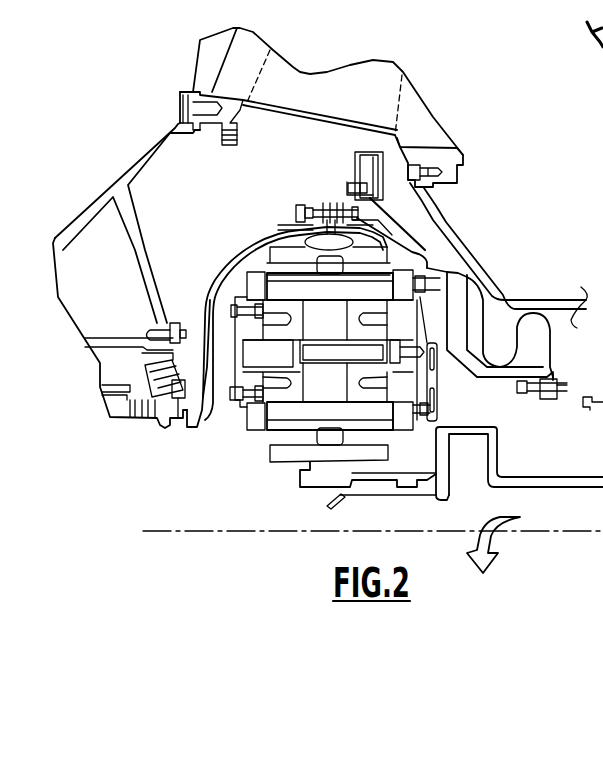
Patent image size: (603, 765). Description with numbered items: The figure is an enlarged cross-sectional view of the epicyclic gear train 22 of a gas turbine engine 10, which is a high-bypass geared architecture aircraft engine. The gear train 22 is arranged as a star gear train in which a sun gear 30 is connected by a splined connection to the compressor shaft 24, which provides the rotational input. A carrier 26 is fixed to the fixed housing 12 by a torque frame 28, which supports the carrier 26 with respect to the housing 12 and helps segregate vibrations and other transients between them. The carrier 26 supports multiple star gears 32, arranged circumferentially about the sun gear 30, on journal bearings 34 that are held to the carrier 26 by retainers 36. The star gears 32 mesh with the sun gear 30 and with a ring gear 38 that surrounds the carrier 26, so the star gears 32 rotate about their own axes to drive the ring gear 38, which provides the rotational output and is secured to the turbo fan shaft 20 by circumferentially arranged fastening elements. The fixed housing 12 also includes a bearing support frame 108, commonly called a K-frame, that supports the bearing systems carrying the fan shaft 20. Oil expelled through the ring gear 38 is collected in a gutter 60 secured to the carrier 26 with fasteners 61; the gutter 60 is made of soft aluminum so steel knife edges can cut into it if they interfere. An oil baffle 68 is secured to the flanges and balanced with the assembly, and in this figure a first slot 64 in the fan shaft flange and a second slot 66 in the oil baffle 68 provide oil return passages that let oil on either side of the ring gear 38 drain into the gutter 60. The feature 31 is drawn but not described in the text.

The gas turbine engine 10 is at (314, 48).
The fixed housing 12 is at (458, 270).
The turbo fan shaft 20 is at (190, 428).
The epicyclic gear train 22 is at (243, 487).
The compressor shaft 24 is at (527, 478).
The carrier 26 is at (405, 393).
The torque frame 28 is at (458, 353).
The sun gear 30 is at (310, 456).
The spring loop 31 is at (457, 308).
The star gears 32 is at (278, 290).
The journal bearings 34 is at (252, 372).
The retainers 36 is at (240, 387).
The ring gear 38 is at (294, 241).
The gutter 60 is at (307, 197).
The fasteners 61 is at (363, 187).
The first slot 64 is at (307, 204).
The second slot 66 is at (333, 197).
The oil baffle 68 is at (387, 240).
The bearing support frame 108 is at (88, 208).